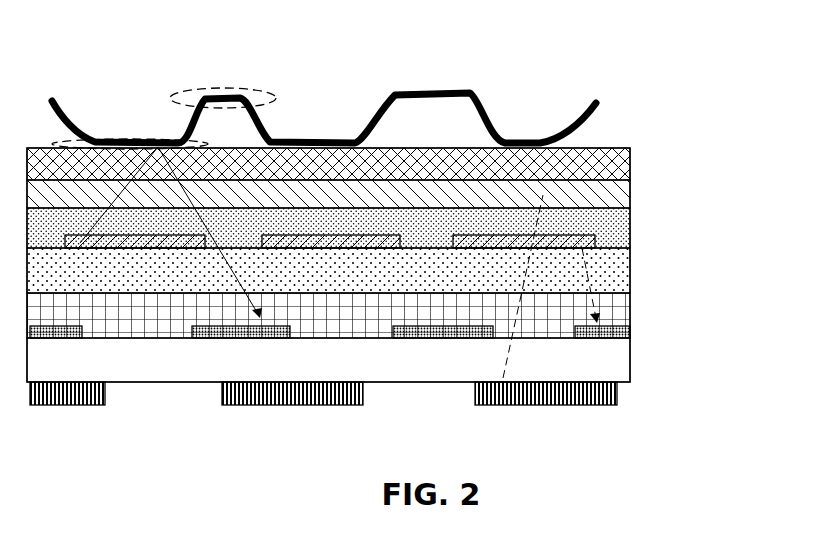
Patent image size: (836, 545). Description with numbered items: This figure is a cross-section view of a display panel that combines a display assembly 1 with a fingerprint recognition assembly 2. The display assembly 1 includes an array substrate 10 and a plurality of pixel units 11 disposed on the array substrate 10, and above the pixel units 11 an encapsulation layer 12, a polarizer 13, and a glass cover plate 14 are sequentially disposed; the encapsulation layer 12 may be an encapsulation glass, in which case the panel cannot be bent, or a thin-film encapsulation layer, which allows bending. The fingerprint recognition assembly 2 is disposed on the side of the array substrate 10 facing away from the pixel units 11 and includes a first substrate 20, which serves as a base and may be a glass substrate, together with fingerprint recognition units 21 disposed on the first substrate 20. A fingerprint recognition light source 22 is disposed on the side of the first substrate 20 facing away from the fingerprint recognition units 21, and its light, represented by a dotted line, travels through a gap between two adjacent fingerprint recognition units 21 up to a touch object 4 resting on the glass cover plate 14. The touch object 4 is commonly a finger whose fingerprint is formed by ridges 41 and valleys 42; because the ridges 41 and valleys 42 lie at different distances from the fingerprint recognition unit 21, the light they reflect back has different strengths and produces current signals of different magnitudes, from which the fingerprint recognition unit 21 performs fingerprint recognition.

The display assembly 1 is at (390, 220).
The array substrate 10 is at (374, 270).
The pixel unit 11 is at (632, 233).
The encapsulation layer 12 is at (632, 212).
The polarizer 13 is at (632, 187).
The glass cover plate 14 is at (632, 165).
The fingerprint recognition assembly 2 is at (392, 349).
The first substrate 20 is at (615, 365).
The fingerprint recognition unit 21 is at (632, 325).
The fingerprint recognition light source 22 is at (618, 385).
The touch object 4 is at (237, 33).
The ridge 41 is at (118, 136).
The valley 42 is at (227, 88).